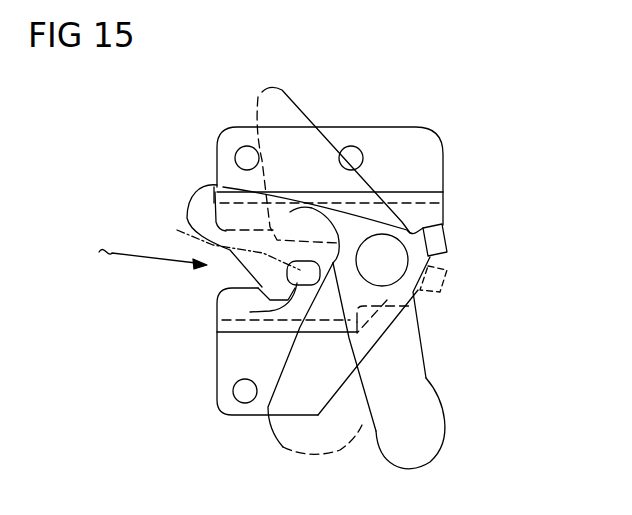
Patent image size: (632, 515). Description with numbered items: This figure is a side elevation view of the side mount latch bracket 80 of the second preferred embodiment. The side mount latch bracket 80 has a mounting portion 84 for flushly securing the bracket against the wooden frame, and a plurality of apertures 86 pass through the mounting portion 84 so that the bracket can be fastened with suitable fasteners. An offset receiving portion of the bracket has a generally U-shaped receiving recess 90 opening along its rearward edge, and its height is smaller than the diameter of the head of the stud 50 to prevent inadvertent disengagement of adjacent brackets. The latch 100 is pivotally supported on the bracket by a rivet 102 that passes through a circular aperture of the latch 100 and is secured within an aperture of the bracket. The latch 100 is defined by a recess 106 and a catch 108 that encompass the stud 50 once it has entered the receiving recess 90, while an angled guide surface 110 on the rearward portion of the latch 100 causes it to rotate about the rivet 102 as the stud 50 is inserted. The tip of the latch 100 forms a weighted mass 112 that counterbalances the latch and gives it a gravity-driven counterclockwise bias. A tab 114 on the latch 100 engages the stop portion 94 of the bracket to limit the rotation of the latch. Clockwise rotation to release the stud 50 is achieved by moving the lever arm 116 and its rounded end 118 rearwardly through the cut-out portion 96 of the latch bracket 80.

The stud 50 is at (177, 230).
The side mount latch bracket 80 is at (449, 144).
The mounting portion 84 is at (406, 153).
The apertures 86 is at (243, 157).
The receiving recess 90 is at (136, 254).
The stop portion 94 is at (436, 213).
The cut-out portion 96 is at (343, 415).
The latch 100 is at (430, 327).
The rivet 102 is at (390, 272).
The recess 106 is at (237, 320).
The catch 108 is at (262, 285).
The angled guide surface 110 is at (187, 228).
The weighted mass 112 is at (214, 190).
The tab 114 is at (440, 246).
The lever arm 116 is at (413, 380).
The rounded end 118 is at (429, 428).